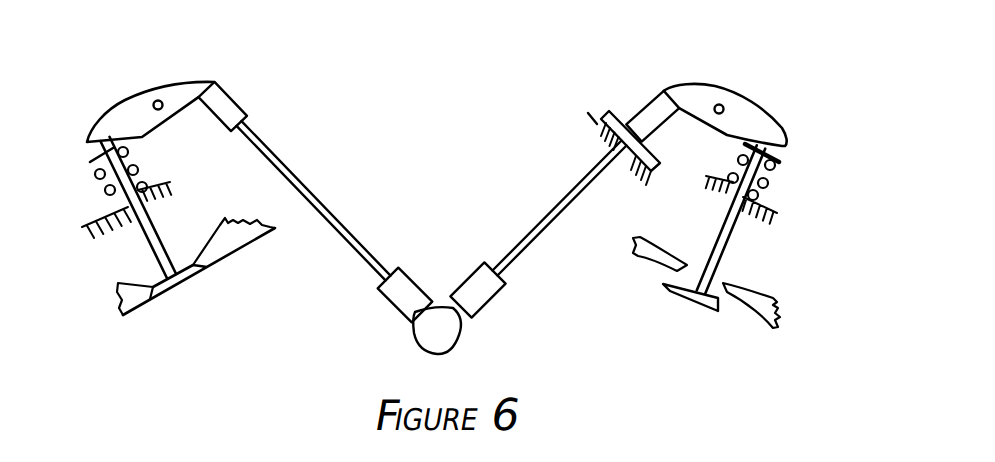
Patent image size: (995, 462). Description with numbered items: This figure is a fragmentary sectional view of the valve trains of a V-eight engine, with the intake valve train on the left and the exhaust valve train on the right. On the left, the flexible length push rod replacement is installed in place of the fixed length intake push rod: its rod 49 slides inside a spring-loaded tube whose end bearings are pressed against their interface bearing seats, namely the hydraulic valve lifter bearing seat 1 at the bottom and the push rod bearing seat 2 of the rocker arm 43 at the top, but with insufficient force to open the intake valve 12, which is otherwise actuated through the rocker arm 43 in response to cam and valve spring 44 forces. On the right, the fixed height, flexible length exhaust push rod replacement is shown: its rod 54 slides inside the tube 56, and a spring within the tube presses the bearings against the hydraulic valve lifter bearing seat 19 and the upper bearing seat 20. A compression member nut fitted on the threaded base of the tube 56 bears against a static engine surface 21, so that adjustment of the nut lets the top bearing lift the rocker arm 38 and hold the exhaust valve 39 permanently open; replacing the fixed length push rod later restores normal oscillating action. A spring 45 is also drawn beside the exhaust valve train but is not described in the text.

The hydraulic valve lifter bearing seat 1 is at (397, 270).
The rocker arm bearing seat 2 is at (216, 84).
The intake valve 12 is at (163, 278).
The hydraulic valve lifter bearing seat 19 is at (492, 272).
The bearing seat 20 is at (663, 92).
The static engine surface 21 is at (590, 120).
The rocker arm 38 is at (738, 106).
The exhaust valve 39 is at (703, 291).
The rocker arm 43 is at (137, 97).
The valve spring 44 is at (94, 174).
The rollers 45 is at (772, 182).
The rod 49 is at (305, 181).
The rod 54 is at (556, 208).
The tube 56 is at (636, 113).